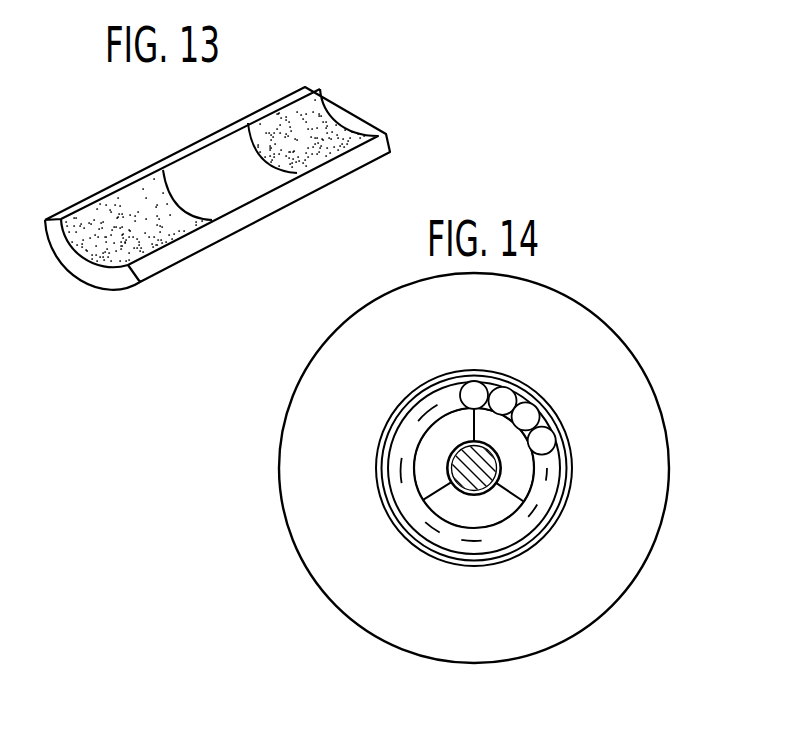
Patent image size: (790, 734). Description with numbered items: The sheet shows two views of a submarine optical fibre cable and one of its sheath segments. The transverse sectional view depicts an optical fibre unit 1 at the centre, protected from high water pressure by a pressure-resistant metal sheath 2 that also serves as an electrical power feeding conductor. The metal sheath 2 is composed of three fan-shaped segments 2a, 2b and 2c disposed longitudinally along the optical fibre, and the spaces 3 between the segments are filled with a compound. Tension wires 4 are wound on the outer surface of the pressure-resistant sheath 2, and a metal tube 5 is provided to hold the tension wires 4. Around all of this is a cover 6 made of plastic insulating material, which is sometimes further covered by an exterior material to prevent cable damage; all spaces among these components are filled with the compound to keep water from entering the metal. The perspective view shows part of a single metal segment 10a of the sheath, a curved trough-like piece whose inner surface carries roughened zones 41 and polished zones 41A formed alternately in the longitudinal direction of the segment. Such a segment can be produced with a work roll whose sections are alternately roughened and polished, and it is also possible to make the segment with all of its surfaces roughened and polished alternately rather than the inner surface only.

In FIG. 14, the optical fibre unit 1 is at (462, 468).
In FIG. 14, the pressure-resistant metal sheath 2 is at (520, 480).
In FIG. 14, the fan-shaped segment 2a is at (437, 440).
In FIG. 14, the fan-shaped segment 2b is at (446, 506).
In FIG. 14, the fan-shaped segment 2c is at (527, 488).
In FIG. 14, the spaces between the segments 3 is at (562, 446).
In FIG. 14, the tension wires 4 is at (532, 417).
In FIG. 14, the metal tube 5 is at (487, 378).
In FIG. 14, the cover 6 is at (647, 428).
In FIG. 13, the metal segment 10a is at (99, 288).
In FIG. 13, the roughened zones 41 is at (148, 217).
In FIG. 13, the polished zones 41A is at (242, 168).